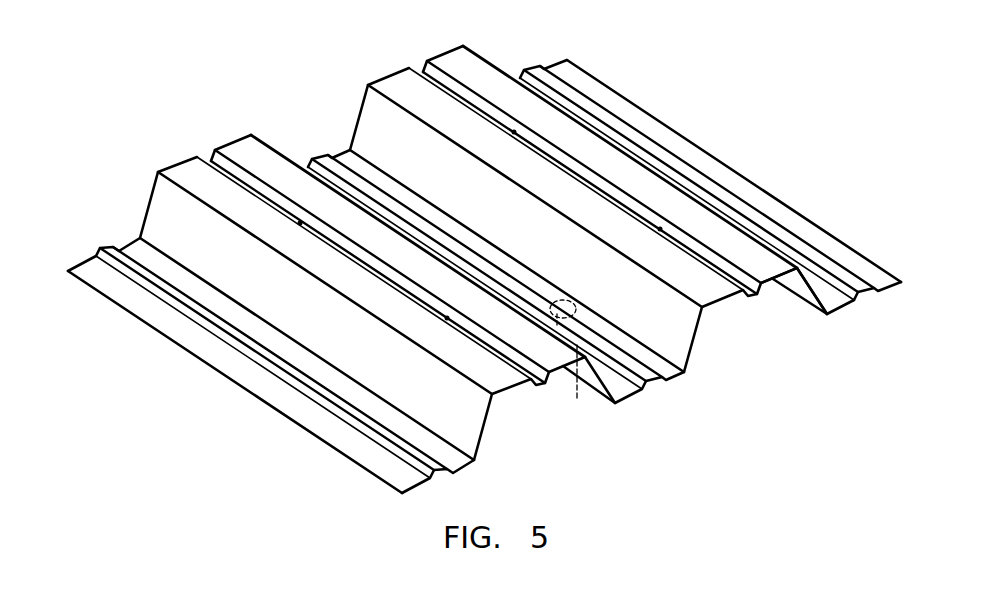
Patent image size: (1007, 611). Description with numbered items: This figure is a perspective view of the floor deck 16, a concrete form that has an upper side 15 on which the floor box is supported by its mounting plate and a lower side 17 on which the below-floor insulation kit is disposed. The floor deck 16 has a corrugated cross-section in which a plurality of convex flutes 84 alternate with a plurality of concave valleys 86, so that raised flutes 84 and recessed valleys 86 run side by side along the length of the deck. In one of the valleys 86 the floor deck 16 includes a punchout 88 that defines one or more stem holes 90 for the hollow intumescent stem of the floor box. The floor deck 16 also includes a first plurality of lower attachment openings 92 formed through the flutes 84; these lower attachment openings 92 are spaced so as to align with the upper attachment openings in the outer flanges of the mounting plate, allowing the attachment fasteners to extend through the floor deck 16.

The upper side 15 is at (460, 61).
The floor deck 16 is at (709, 95).
The lower side 17 is at (795, 271).
The convex flutes 84 is at (514, 404).
The concave valleys 86 is at (453, 483).
The punchout 88 is at (565, 298).
The stem holes 90 is at (581, 388).
The lower attachment openings 92 is at (299, 223).